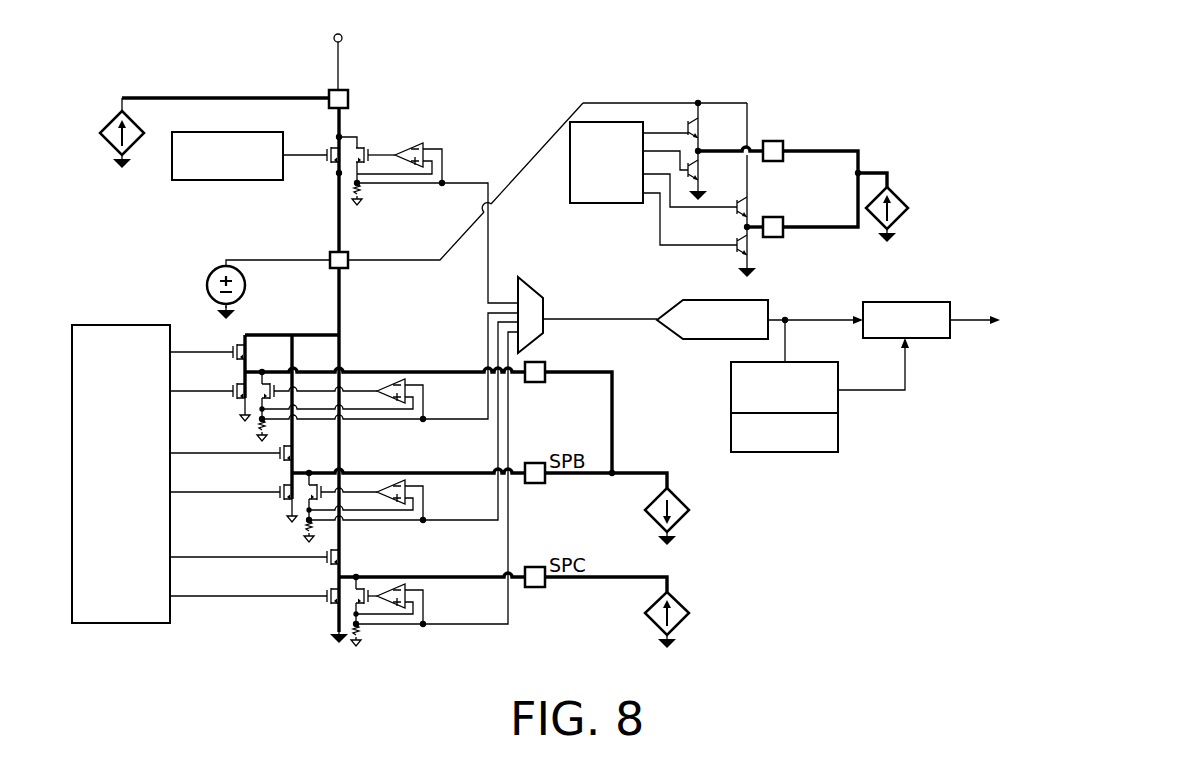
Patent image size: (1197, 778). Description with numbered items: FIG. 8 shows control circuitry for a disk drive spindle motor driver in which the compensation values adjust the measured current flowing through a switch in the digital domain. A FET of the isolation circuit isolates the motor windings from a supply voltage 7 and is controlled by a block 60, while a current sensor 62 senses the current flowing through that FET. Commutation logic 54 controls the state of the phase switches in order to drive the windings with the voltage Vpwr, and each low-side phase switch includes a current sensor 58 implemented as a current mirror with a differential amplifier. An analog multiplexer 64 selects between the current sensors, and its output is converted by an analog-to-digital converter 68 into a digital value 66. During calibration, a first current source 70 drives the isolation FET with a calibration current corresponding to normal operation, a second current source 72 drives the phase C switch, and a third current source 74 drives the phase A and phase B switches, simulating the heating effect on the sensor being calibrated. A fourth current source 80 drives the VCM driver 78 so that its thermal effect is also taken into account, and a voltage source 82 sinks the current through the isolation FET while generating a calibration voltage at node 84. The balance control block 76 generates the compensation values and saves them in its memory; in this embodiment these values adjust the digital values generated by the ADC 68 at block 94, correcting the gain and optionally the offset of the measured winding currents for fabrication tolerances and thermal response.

The supply voltage 7 is at (343, 63).
The commutation logic 54 is at (121, 324).
The current sensor 58 is at (410, 364).
The block controlling the FET 60 is at (229, 181).
The current sensor 62 is at (413, 132).
The analog multiplexer 64 is at (532, 278).
The digital value 66 is at (976, 311).
The analog-to-digital converter 68 is at (708, 300).
The first current source 70 is at (109, 120).
The second current source 72 is at (691, 623).
The third current source 74 is at (691, 519).
The balance control block 76 is at (839, 425).
The VCM driver 78 is at (607, 204).
The fourth current source 80 is at (904, 193).
The voltage source 82 is at (209, 274).
The node 84 is at (353, 254).
The block 94 is at (893, 301).